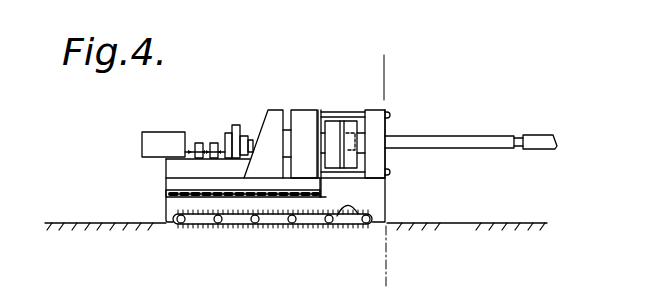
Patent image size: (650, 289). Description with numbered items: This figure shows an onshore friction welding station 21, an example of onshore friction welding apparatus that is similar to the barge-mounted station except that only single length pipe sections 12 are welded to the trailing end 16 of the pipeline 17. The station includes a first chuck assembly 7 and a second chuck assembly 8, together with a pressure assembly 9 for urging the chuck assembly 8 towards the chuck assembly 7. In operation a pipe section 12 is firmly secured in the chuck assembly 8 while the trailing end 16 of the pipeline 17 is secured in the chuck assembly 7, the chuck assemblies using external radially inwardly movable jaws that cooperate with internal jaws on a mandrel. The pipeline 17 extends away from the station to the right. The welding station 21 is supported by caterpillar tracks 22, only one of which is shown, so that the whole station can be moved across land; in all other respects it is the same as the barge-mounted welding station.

The first chuck assembly 7 is at (373, 106).
The second chuck assembly 8 is at (302, 106).
The pressure assembly 9 is at (268, 106).
The pipe section 12 is at (189, 134).
The trailing end 16 is at (440, 143).
The pipeline 17 is at (544, 135).
The onshore welding station 21 is at (294, 78).
The caterpillar tracks 22 is at (352, 218).